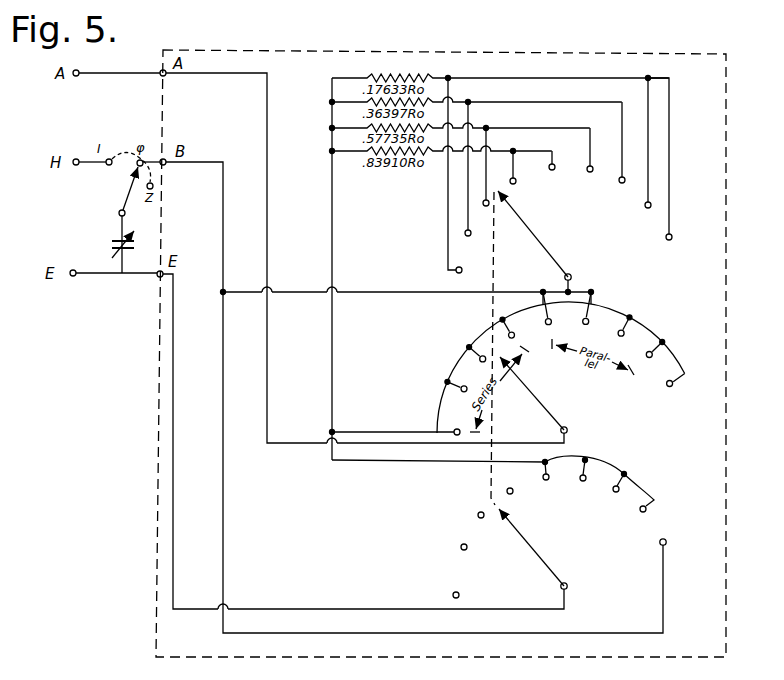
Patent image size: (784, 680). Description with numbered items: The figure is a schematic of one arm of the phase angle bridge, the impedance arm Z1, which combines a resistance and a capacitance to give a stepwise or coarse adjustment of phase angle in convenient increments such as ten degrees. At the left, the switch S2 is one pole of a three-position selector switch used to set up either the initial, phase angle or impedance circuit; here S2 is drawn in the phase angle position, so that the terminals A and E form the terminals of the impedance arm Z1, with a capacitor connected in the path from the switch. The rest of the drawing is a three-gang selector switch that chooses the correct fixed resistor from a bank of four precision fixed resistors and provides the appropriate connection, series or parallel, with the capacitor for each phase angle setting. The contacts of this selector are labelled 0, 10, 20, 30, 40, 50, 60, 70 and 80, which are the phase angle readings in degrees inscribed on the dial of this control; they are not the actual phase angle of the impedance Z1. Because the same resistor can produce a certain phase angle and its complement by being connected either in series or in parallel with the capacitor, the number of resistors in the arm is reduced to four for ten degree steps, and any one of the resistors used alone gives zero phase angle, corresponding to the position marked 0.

The phase angle dial reading 0 is at (461, 178).
The phase angle dial reading 10 is at (477, 173).
The phase angle dial reading 20 is at (481, 175).
The phase angle dial reading 30 is at (519, 176).
The phase angle dial reading 40 is at (548, 169).
The phase angle dial reading 50 is at (585, 157).
The phase angle dial reading 60 is at (616, 151).
The phase angle dial reading 70 is at (642, 150).
The phase angle dial reading 80 is at (660, 167).
The three-position selector switch S2 is at (119, 212).
The impedance arm Z1 is at (152, 452).